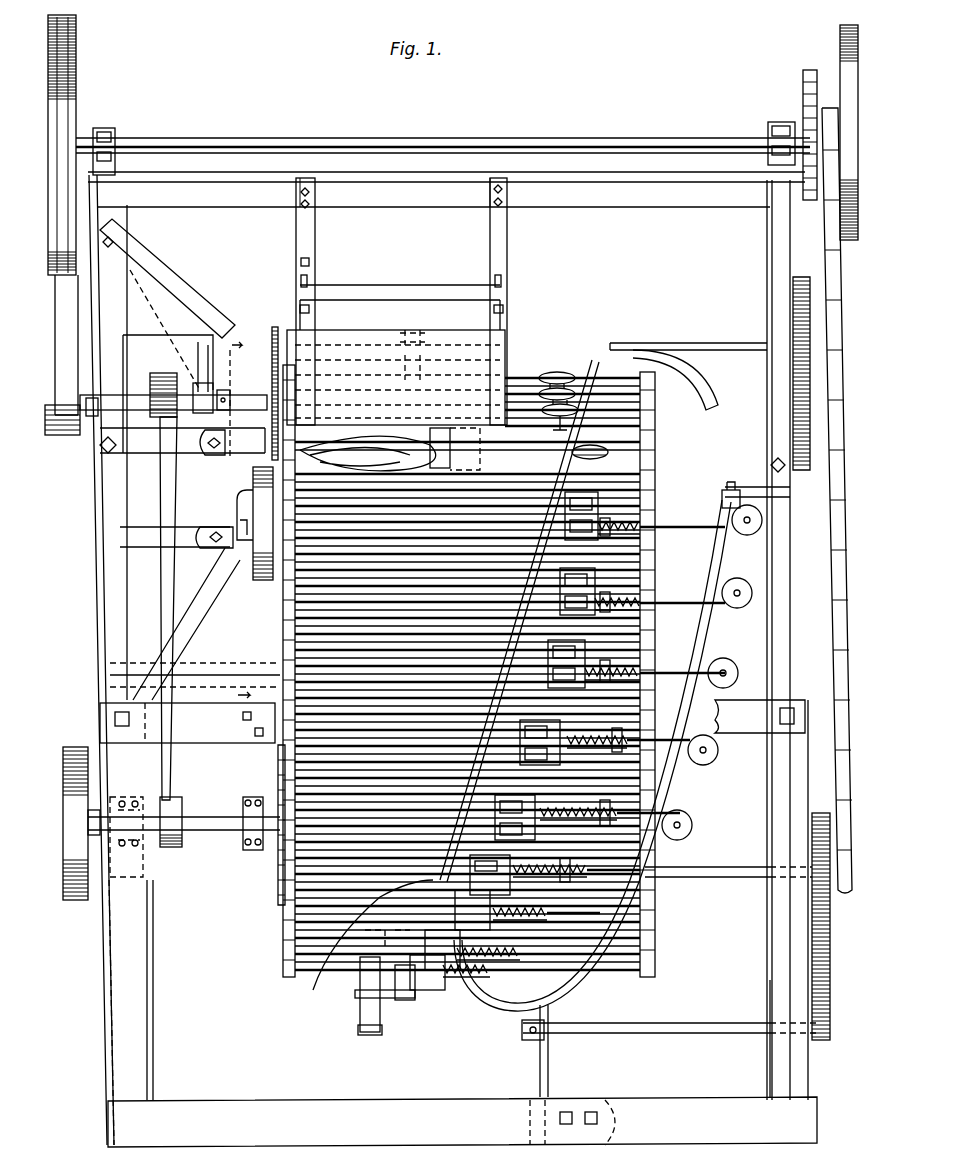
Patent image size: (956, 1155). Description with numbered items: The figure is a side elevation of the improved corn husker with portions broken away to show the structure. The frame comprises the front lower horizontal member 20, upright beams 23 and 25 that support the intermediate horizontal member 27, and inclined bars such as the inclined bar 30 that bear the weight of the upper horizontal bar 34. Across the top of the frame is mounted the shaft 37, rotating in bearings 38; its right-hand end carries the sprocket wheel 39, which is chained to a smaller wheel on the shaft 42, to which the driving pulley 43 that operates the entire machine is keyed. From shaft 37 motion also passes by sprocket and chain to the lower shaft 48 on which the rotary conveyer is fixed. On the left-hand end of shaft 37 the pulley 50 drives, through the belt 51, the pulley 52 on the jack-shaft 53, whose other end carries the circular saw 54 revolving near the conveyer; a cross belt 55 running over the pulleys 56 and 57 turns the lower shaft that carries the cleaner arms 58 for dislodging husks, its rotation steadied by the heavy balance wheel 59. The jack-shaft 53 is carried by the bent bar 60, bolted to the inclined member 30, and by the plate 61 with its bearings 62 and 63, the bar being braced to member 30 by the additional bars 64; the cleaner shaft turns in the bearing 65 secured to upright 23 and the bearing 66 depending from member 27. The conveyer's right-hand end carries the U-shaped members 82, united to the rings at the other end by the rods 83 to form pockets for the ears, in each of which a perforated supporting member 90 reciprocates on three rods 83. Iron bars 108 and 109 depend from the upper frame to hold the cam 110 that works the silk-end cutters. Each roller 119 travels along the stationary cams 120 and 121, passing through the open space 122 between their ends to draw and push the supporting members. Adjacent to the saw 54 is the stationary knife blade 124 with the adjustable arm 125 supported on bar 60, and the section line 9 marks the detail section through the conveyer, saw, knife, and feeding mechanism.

The front lower horizontal member 20 is at (380, 1106).
The upright beam 23 is at (150, 992).
The upright beam 25 is at (803, 658).
The intermediate horizontal member 27 is at (213, 738).
The inclined bar 30 is at (98, 490).
The upper horizontal bar 34 is at (430, 172).
The shaft 37 is at (340, 142).
The bearings 38 is at (114, 130).
The sprocket wheel 39 is at (803, 78).
The shaft 42 is at (835, 488).
The driving pulley 43 is at (840, 58).
The lower shaft 48 is at (198, 670).
The pulley 50 is at (78, 84).
The belt 51 is at (67, 345).
The pulley 52 is at (70, 433).
The jack-shaft 53 is at (130, 402).
The circular saw 54 is at (274, 362).
The cross belt 55 is at (172, 480).
The pulley 56 is at (201, 443).
The pulley 57 is at (183, 807).
The cleaner arms 58 is at (278, 748).
The balance wheel 59 is at (79, 838).
The bent bar 60 is at (153, 302).
The plate 61 is at (200, 340).
The bearing 62 is at (90, 418).
The bearing 63 is at (215, 400).
The additional bars 64 is at (152, 445).
The bearing 65 is at (137, 835).
The bearing 66 is at (248, 838).
The U-shaped member 82 is at (646, 453).
The rods 83 is at (476, 593).
The perforated supporting member 90 is at (600, 527).
The iron bar 108 is at (307, 245).
The iron bar 109 is at (500, 247).
The cam 110 is at (396, 359).
The roller 119 is at (736, 660).
The stationary cam 120 is at (686, 783).
The stationary cam 121 is at (583, 364).
The open space 122 is at (716, 450).
The stationary knife blade 124 is at (240, 503).
The adjustable arm 125 is at (366, 957).
The section line 9 is at (236, 515).